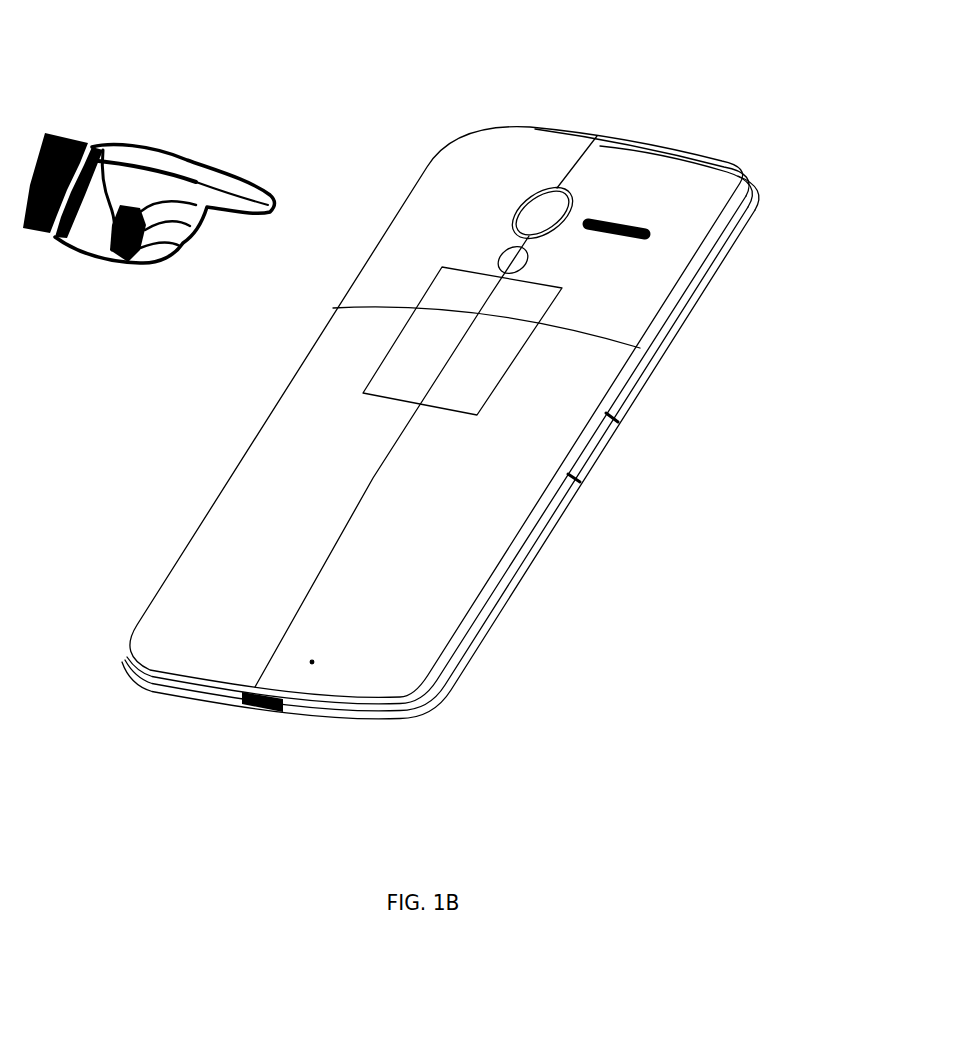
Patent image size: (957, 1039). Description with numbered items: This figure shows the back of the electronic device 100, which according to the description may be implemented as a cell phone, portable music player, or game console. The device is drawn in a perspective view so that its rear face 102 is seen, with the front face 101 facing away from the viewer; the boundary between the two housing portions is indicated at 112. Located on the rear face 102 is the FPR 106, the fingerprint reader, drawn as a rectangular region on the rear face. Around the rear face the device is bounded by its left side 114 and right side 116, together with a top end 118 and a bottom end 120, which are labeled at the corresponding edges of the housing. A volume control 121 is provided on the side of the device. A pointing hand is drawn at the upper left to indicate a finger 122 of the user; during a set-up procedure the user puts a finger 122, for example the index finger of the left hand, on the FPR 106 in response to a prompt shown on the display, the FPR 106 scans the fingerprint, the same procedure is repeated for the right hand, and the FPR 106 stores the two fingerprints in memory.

The electronic device 100 is at (726, 564).
The front face 101 is at (576, 521).
The rear face 102 is at (310, 342).
The FPR 106 is at (527, 337).
The housing portion boundary 112 is at (433, 253).
The left side 114 is at (564, 598).
The right side 116 is at (231, 431).
The top end 118 is at (652, 122).
The bottom end 120 is at (304, 735).
The volume control 121 is at (613, 440).
The finger 122 is at (230, 170).